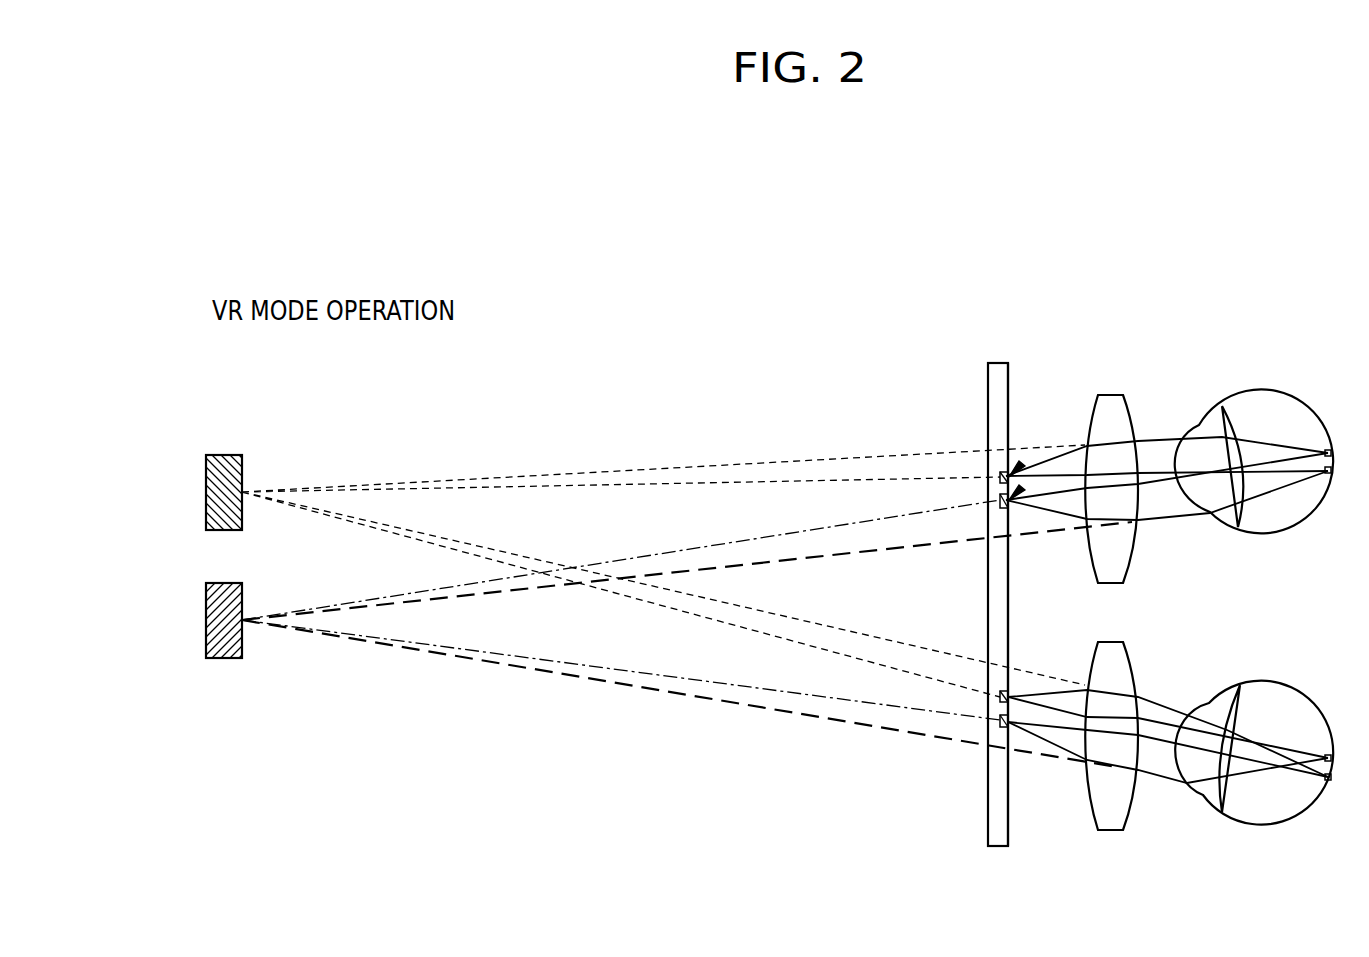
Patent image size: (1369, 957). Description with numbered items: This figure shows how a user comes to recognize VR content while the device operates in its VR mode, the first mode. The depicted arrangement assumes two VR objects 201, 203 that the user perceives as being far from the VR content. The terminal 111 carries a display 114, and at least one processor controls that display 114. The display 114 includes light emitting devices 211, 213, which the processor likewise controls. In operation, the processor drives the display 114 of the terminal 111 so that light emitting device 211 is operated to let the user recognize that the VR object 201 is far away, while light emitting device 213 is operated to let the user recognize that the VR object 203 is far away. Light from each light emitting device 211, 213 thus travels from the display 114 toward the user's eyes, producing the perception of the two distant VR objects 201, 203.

The VR object 201 is at (206, 494).
The VR object 203 is at (206, 622).
The terminal 111 is at (998, 363).
The display 114 is at (1009, 822).
The light emitting device 211 is at (1000, 480).
The light emitting device 213 is at (1000, 505).